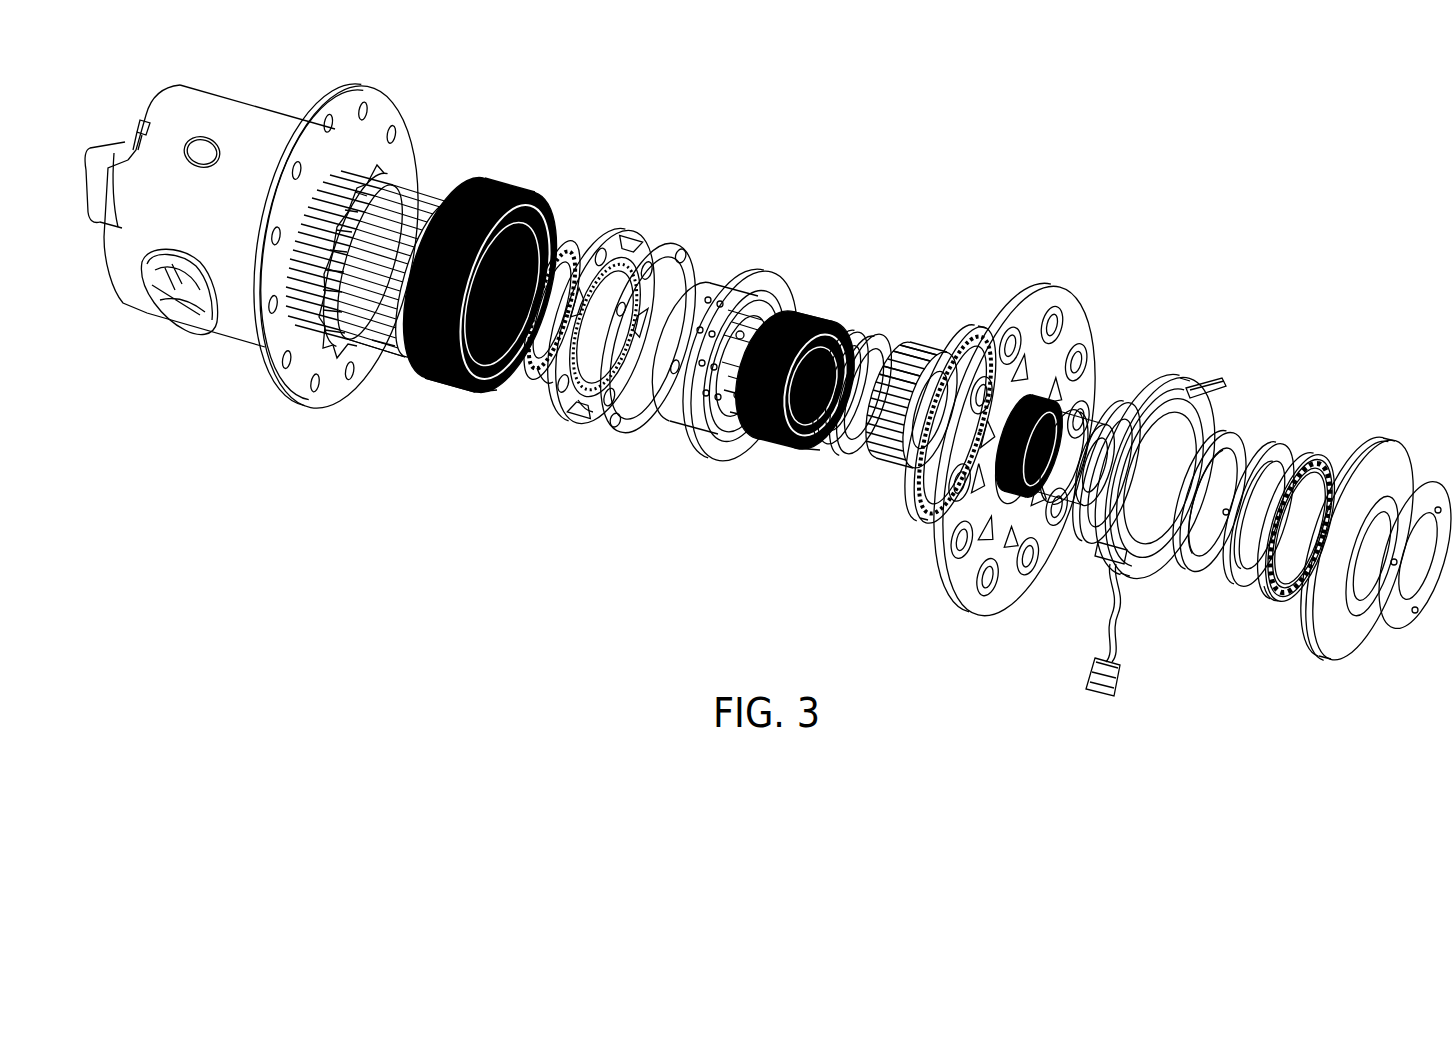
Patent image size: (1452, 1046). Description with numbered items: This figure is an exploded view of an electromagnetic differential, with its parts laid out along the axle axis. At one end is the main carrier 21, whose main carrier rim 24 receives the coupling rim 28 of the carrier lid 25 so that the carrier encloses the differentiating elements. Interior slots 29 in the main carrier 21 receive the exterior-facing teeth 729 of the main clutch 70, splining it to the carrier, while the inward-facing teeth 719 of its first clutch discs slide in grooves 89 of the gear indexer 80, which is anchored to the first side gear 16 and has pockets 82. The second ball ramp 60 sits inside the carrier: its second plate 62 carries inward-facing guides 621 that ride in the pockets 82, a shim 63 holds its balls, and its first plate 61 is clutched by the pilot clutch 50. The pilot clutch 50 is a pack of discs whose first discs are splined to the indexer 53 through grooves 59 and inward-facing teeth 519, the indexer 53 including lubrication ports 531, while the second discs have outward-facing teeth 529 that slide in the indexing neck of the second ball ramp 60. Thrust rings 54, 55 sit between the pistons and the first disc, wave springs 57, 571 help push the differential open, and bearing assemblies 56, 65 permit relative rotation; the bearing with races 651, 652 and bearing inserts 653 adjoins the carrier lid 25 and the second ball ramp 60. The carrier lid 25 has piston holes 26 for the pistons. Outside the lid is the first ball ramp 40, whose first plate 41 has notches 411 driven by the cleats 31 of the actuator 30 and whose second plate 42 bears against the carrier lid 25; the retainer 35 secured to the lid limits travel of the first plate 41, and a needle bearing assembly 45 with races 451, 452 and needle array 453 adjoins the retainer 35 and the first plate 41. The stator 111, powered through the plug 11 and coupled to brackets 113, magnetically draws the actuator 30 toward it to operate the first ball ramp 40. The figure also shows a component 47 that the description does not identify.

The plug 11 is at (1095, 703).
The first side gear 16 is at (387, 190).
The main carrier 21 is at (272, 108).
The main carrier rim 24 is at (380, 100).
The carrier lid 25 is at (977, 607).
The piston holes 26 is at (1010, 518).
The coupling rim 28 is at (205, 150).
The interior slots 29 is at (367, 203).
The actuator 30 is at (1350, 663).
The cleats 31 is at (1365, 623).
The retainer 35 is at (1423, 617).
The first ball ramp 40 is at (1278, 395).
The first plate 41 is at (1290, 458).
The second plate 42 is at (1193, 577).
The needle bearing assembly 45 is at (1309, 612).
The spacer ring 47 is at (1110, 405).
The pilot clutch 50 is at (882, 275).
The indexer 53 is at (893, 460).
The thrust ring 54 is at (850, 456).
The thrust ring 55 is at (828, 448).
The bearing 56 is at (541, 395).
The wave spring 57 is at (757, 447).
The grooves 59 is at (888, 380).
The second ball ramp 60 is at (678, 188).
The first plate 61 is at (760, 273).
The second plate 62 is at (618, 232).
The shim 63 is at (697, 258).
The bearing assembly 65 is at (985, 250).
The main clutch 70 is at (528, 140).
The gear indexer 80 is at (373, 367).
The pockets 82 is at (438, 197).
The grooves 89 is at (370, 342).
The stator 111 is at (1167, 378).
The brackets 113 is at (1233, 350).
The notches 411 is at (1275, 592).
The race 451 is at (1365, 478).
The race 452 is at (1325, 465).
The needle array 453 is at (1335, 468).
The inward-facing teeth 519 is at (808, 464).
The outward-facing teeth 529 is at (834, 318).
The lubrication ports 531 is at (910, 397).
The wave spring 571 is at (547, 247).
The inward-facing guides 621 is at (582, 418).
The race 651 is at (922, 500).
The race 652 is at (972, 343).
The bearing inserts 653 is at (1000, 320).
The inward-facing teeth 719 is at (491, 402).
The exterior-facing teeth 729 is at (442, 400).